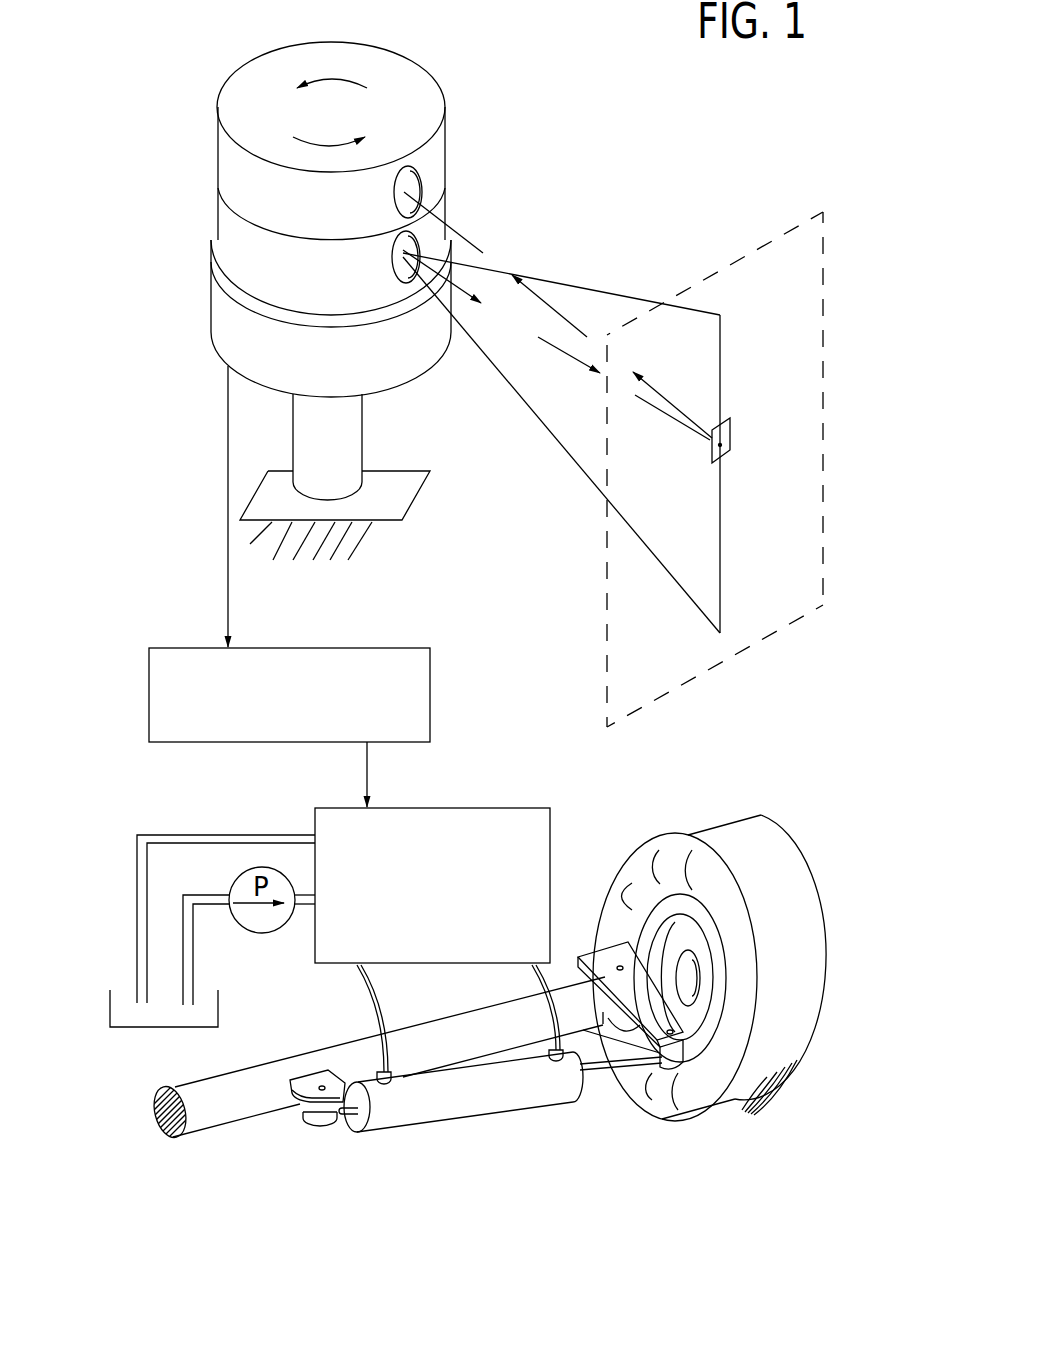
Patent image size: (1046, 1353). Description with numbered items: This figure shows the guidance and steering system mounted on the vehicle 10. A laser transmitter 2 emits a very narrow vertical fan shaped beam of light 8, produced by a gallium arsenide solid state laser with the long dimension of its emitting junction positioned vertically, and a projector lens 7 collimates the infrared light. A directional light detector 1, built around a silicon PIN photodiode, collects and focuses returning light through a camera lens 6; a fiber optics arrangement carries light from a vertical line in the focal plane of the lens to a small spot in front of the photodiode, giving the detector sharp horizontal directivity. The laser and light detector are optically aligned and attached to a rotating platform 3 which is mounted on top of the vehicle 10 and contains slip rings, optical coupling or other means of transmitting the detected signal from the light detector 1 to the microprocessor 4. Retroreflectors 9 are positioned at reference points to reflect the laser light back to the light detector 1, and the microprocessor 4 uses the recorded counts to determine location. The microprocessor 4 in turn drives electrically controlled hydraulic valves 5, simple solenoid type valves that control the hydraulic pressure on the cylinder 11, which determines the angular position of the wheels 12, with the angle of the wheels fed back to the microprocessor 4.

The directional light detector 1 is at (230, 175).
The laser transmitter 2 is at (233, 257).
The rotating platform 3 is at (230, 323).
The microprocessor 4 is at (198, 646).
The electrically controlled hydraulic valves 5 is at (337, 807).
The camera lens 6 is at (418, 180).
The projector lens 7 is at (420, 237).
The fan shaped beam of light 8 is at (543, 275).
The retroreflectors 9 is at (732, 427).
The vehicle 10 is at (341, 515).
The cylinder 11 is at (545, 1103).
The wheels 12 is at (697, 1113).